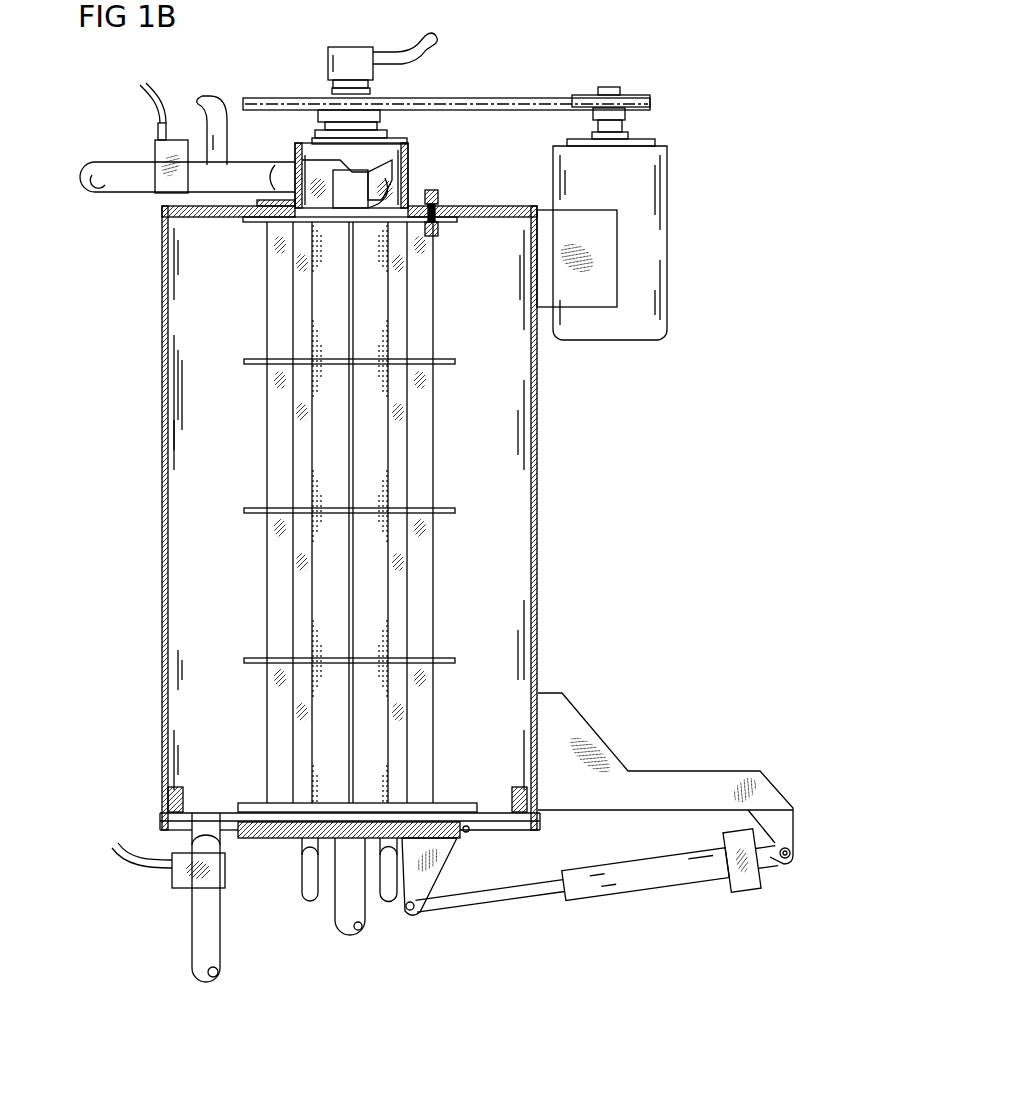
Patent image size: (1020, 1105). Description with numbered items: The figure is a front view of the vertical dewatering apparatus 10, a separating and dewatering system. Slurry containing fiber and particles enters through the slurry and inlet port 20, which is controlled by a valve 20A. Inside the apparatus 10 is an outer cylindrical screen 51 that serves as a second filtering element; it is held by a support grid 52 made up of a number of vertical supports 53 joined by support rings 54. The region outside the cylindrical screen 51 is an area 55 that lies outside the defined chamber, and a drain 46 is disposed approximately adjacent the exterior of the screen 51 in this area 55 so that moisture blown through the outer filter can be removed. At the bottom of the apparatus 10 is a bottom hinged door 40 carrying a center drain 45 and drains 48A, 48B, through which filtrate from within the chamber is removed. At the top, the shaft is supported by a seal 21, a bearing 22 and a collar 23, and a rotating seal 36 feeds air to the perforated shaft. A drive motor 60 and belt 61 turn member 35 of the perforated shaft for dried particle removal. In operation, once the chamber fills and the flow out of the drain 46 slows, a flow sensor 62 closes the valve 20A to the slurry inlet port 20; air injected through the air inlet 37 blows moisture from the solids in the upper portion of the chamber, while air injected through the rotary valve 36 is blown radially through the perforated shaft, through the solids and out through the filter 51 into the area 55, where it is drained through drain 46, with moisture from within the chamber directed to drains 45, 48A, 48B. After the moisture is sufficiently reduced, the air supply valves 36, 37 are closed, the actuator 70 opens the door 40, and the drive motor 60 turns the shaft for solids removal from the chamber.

The vertical dewatering apparatus 10 is at (148, 358).
The slurry and inlet port 20 is at (110, 163).
The valve 20A is at (157, 147).
The seal 21 is at (373, 143).
The bearing 22 is at (380, 133).
The collar 23 is at (382, 126).
The member 35 is at (413, 100).
The rotating seal 36 is at (330, 58).
The air inlet 37 is at (218, 106).
The bottom hinged door 40 is at (260, 838).
The center drain 45 is at (357, 935).
The drain 46 is at (200, 945).
The drain 48A is at (308, 902).
The drain 48B is at (388, 902).
The outer cylindrical screen 51 is at (320, 465).
The support grid 52 is at (275, 268).
The vertical supports 53 is at (275, 404).
The support rings 54 is at (245, 510).
The area 55 is at (208, 587).
The drive motor 60 is at (623, 313).
The belt 61 is at (510, 98).
The flow sensor 62 is at (170, 882).
The actuator 70 is at (632, 883).